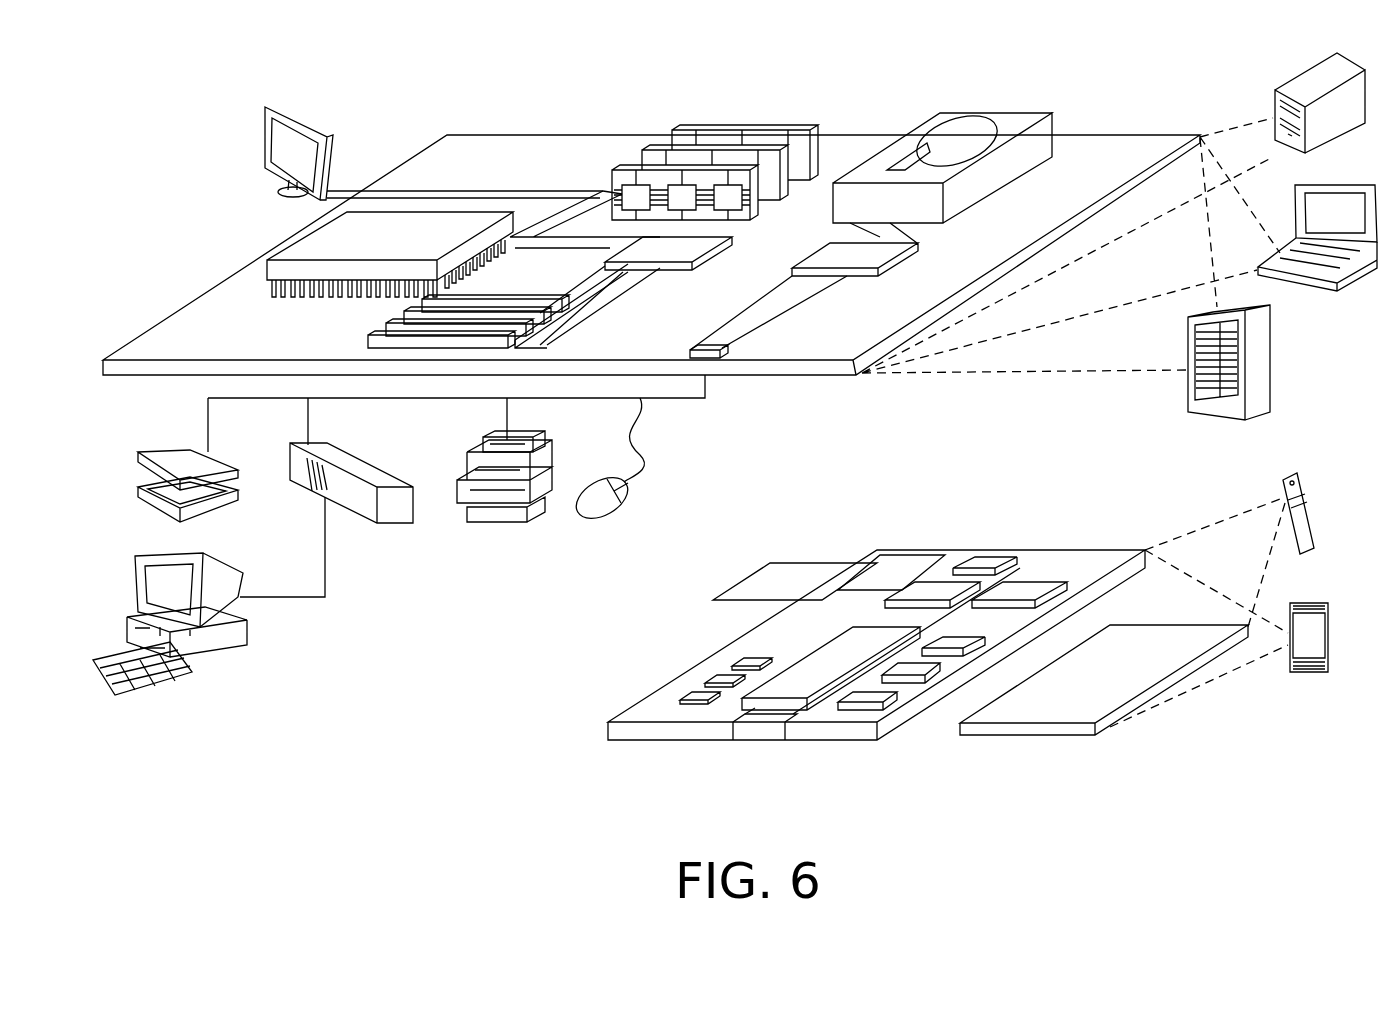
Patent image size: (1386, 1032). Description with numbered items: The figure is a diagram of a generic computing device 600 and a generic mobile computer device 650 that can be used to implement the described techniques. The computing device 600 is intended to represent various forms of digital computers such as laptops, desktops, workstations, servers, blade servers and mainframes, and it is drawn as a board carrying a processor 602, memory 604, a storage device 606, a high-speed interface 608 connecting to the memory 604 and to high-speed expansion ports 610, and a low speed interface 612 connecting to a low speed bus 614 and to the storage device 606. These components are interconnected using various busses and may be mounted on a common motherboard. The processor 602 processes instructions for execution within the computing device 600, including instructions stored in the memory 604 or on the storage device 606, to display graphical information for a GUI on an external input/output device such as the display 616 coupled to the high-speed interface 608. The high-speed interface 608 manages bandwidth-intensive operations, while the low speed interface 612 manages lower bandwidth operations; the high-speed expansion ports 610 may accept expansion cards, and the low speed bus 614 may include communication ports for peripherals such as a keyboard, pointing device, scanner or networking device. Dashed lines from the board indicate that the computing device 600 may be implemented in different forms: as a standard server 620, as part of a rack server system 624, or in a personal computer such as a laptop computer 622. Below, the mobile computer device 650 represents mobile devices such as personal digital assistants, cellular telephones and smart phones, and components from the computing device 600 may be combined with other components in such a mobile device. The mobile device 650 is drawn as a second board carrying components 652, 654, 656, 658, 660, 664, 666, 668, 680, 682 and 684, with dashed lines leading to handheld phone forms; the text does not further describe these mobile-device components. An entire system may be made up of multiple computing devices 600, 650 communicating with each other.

The computing device 600 is at (402, 85).
The processor 602 is at (293, 242).
The memory 604 is at (748, 127).
The storage device 606 is at (987, 113).
The high-speed interface 608 is at (680, 247).
The high-speed expansion ports 610 is at (393, 320).
The low speed interface 612 is at (827, 252).
The low speed bus 614 is at (712, 343).
The display 616 is at (270, 105).
The standard server 620 is at (1298, 83).
The laptop computer 622 is at (1353, 183).
The rack server system 624 is at (1272, 358).
The mobile computer device 650 is at (1182, 730).
The processor 652 is at (798, 673).
The battery 654 is at (1142, 642).
The sensor 656 is at (890, 697).
The memory 658 is at (918, 672).
The storage 660 is at (957, 637).
The input/output components 664 is at (710, 677).
The wireless transceiver 666 is at (933, 585).
The network interface 668 is at (1027, 587).
The cellular telephone 680 is at (987, 563).
The smart phone 682 is at (857, 563).
The display interface 684 is at (772, 563).